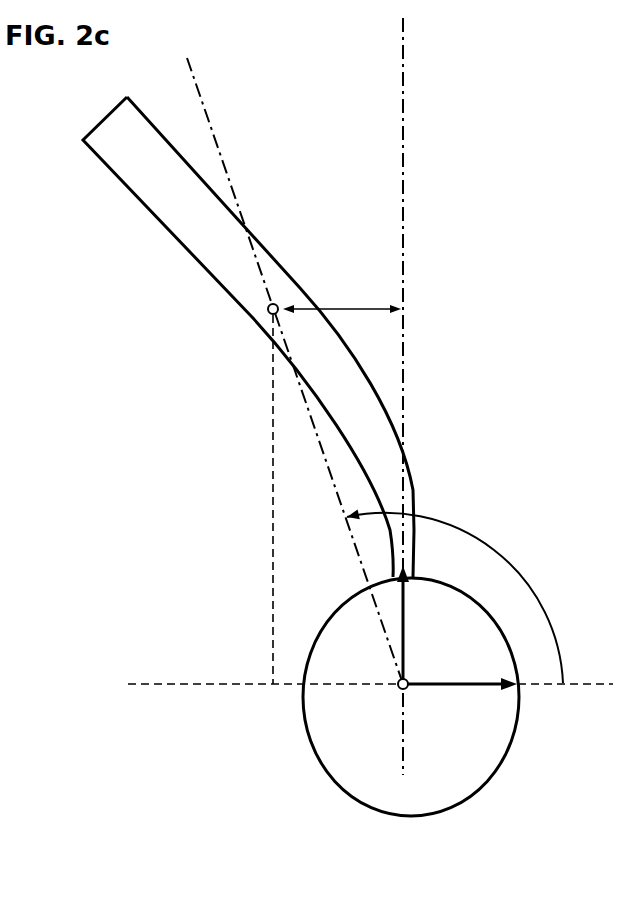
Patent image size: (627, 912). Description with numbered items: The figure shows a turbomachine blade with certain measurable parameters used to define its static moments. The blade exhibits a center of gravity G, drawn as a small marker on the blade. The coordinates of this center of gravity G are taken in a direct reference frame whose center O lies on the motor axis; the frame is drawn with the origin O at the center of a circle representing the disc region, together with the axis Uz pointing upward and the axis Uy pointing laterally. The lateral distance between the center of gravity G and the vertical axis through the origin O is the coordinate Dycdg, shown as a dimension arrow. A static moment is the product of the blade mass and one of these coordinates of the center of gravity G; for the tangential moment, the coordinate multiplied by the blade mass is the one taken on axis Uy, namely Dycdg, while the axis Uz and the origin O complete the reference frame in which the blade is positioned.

The center of gravity G is at (268, 313).
The center of the frame O is at (397, 689).
The coordinate of the center of gravity on axis Uy Dycdg is at (342, 292).
The axis Uz is at (417, 625).
The axis Uy is at (460, 704).